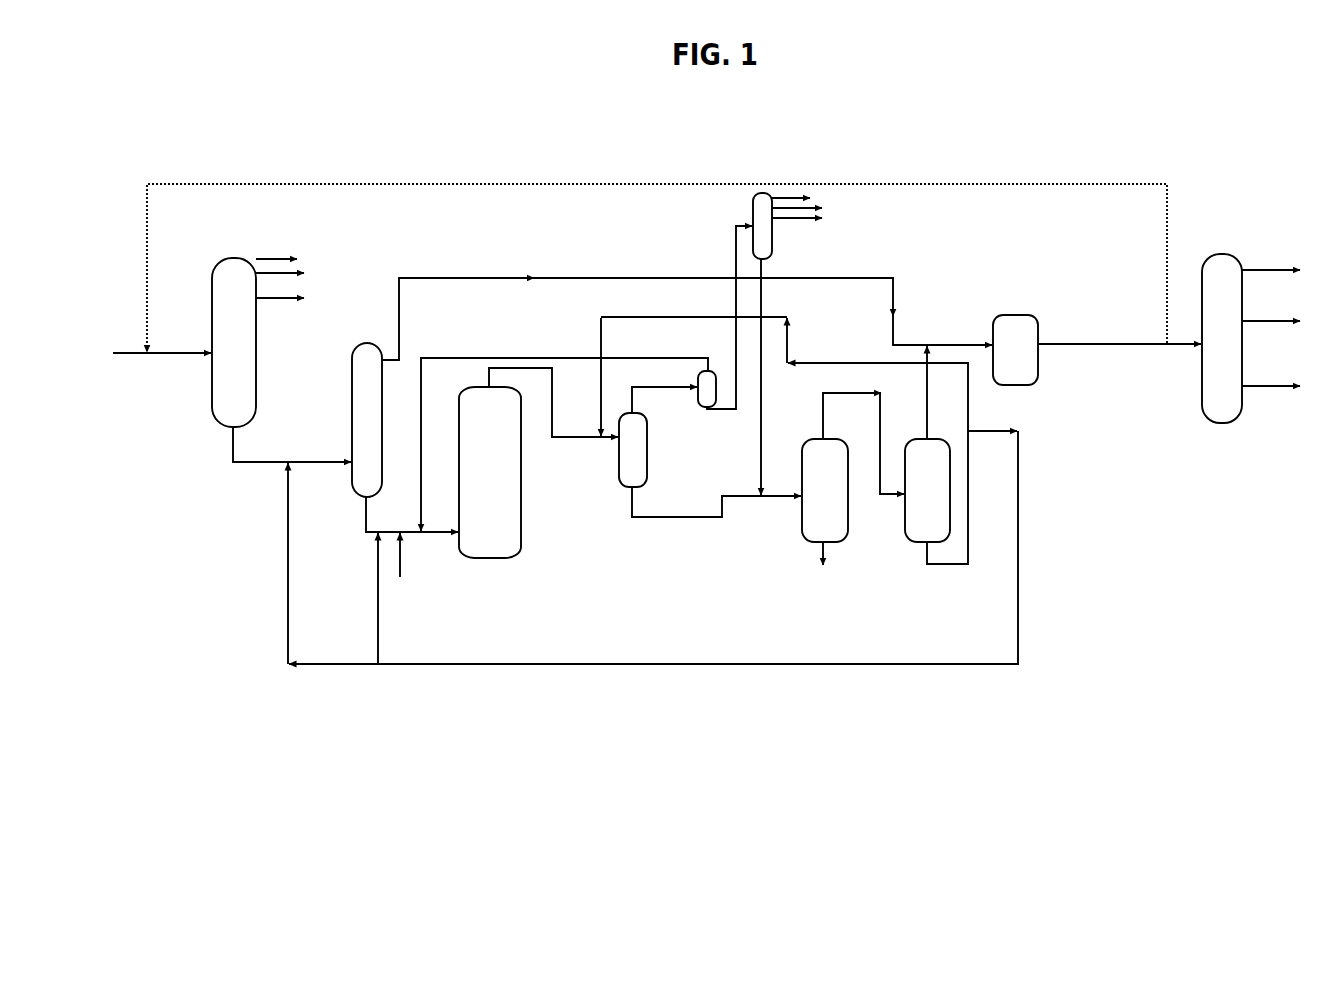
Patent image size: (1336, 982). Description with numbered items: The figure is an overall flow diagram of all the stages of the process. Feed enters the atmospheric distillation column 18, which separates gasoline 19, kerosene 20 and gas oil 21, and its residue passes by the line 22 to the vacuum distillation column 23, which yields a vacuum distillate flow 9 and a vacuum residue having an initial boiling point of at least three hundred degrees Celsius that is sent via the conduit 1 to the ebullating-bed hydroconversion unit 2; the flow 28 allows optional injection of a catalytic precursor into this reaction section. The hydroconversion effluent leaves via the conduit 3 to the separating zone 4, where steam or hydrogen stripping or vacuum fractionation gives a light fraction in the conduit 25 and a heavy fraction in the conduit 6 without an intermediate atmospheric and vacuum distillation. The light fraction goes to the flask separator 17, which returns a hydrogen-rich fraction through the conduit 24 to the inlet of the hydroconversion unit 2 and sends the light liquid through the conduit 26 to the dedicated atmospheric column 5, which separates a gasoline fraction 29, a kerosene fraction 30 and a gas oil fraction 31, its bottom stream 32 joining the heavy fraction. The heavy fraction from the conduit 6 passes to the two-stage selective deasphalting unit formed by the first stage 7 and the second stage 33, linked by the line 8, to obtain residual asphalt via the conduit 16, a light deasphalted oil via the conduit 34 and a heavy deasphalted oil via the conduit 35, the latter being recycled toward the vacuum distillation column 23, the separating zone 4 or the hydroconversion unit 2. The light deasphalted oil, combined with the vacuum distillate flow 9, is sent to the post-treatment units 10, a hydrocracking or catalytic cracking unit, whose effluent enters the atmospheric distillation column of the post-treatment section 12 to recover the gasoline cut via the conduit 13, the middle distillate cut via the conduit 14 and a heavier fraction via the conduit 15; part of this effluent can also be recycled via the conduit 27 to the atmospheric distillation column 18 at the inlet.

The conduit 1 is at (412, 580).
The ebullating-bed hydroconversion unit 2 is at (490, 472).
The conduit 3 is at (553, 377).
The separating zone 4 is at (633, 450).
The atmospheric column 5 is at (769, 226).
The conduit 6 is at (716, 502).
The selective deasphalting stage 7 is at (825, 490).
The vapor stream 8 is at (863, 443).
The flow containing vacuum distillate fraction 9 is at (687, 319).
The post-treatment units 10 is at (1097, 350).
The atmospheric distillation column of the post-treatment section 12 is at (1222, 331).
The conduit 13 is at (1271, 262).
The conduit 14 is at (1271, 314).
The conduit 15 is at (1271, 378).
The conduit 16 is at (834, 555).
The flask separator 17 is at (713, 389).
The atmospheric distillation column 18 is at (234, 342).
The gasoline fraction 19 is at (286, 259).
The kerosene fraction 20 is at (290, 273).
The gas oil fraction 21 is at (290, 298).
The bottoms stream from column 22 is at (625, 545).
The vacuum distillation column 23 is at (374, 420).
The conduit 24 is at (564, 437).
The conduit 25 is at (655, 398).
The conduit 26 is at (729, 326).
The conduit 27 is at (657, 268).
The flow 28 is at (409, 555).
The gasoline fraction 29 is at (800, 198).
The kerosene fraction 30 is at (805, 208).
The gas oil fraction 31 is at (805, 218).
The column bottoms stream 32 is at (772, 377).
The selective deasphalting stage 33 is at (927, 490).
The conduit 34 is at (936, 392).
The conduit 35 is at (809, 440).